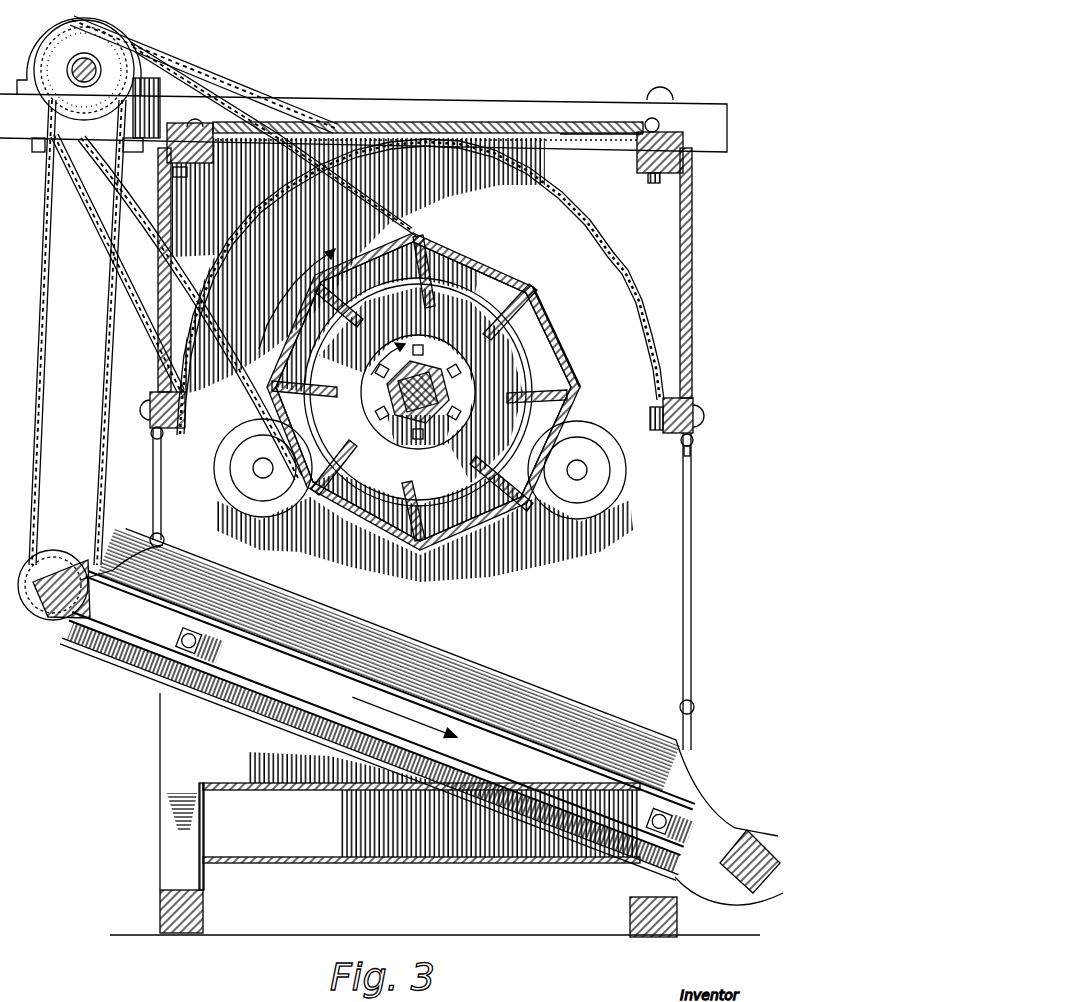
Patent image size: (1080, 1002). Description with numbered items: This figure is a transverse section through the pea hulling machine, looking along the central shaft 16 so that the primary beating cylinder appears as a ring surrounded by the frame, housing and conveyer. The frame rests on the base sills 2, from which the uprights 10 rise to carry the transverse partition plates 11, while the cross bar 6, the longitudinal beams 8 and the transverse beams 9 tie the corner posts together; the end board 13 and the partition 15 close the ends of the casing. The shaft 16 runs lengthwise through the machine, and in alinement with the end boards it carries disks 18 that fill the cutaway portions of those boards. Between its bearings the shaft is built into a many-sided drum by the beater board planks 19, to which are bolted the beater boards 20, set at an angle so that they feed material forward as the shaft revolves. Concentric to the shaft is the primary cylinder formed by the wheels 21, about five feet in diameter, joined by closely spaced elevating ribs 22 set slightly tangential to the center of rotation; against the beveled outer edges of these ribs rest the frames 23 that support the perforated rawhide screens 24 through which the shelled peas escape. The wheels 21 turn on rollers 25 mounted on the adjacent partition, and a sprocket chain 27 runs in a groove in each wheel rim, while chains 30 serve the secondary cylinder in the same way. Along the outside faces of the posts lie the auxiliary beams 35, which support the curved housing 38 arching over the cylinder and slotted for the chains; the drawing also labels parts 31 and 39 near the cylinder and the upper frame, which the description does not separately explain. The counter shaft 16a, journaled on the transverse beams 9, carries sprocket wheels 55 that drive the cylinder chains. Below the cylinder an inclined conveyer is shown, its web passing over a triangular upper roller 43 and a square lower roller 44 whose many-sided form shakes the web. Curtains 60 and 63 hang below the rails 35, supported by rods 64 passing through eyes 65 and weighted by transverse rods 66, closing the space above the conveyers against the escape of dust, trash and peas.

The base sill 2 is at (196, 903).
The cross bar 6 is at (645, 177).
The longitudinal beam 8 is at (213, 127).
The transverse beam 9 is at (451, 110).
The upright 10 is at (168, 868).
The partition plate 11 is at (378, 376).
The end board 13 is at (424, 407).
The partition 15 is at (421, 807).
The shaft 16 is at (425, 370).
The counter shaft 16a is at (112, 55).
The disk 18 is at (377, 394).
The beater board plank 19 is at (450, 410).
The beater board 20 is at (447, 368).
The wheel 21 is at (543, 360).
The elevating rib 22 is at (440, 260).
The screen frame 23 is at (470, 272).
The screen 24 is at (530, 272).
The roller 25 is at (420, 469).
The sprocket chain 27 is at (393, 233).
The sprocket chain 30 is at (285, 108).
The blade 31 is at (520, 330).
The auxiliary beam 35 is at (150, 412).
The housing 38 is at (533, 174).
The guide channel 39 is at (628, 136).
The upper roller 43 is at (48, 615).
The lower roller 44 is at (777, 833).
The sprocket wheel 55 is at (164, 47).
The curtain 60 is at (161, 478).
The curtain 63 is at (692, 563).
The rod 64 is at (692, 450).
The eye 65 is at (695, 441).
The transverse rod 66 is at (164, 538).